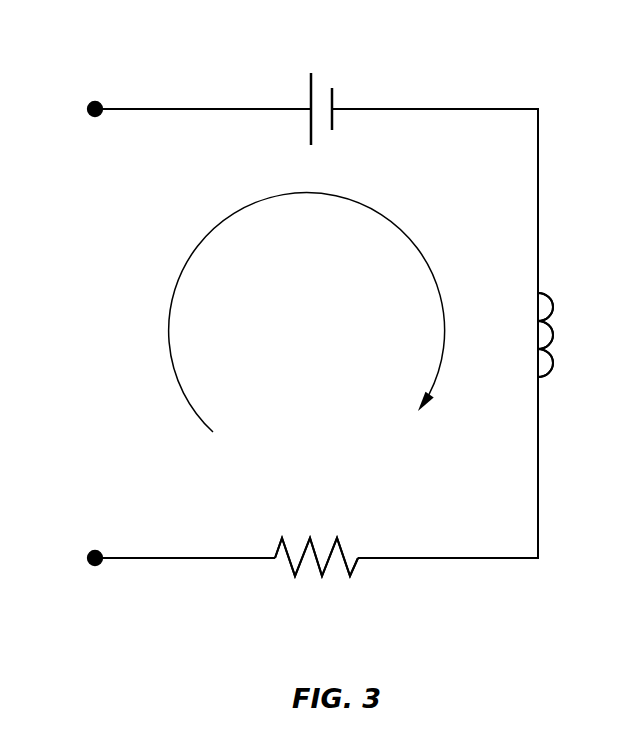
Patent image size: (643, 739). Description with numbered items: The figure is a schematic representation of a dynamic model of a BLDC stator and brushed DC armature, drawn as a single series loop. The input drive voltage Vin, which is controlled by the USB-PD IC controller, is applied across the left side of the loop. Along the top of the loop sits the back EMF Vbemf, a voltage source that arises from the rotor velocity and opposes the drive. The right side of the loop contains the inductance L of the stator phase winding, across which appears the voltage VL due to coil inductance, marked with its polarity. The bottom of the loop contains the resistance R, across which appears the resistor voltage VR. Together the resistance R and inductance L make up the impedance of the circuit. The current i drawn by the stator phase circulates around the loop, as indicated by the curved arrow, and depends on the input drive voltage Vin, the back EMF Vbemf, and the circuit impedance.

The back EMF Vbemf is at (308, 90).
The input drive voltage Vin is at (72, 142).
The current i is at (307, 312).
The inductance L is at (528, 335).
The voltage due to coil inductance VL is at (581, 336).
The resistance R is at (316, 538).
The resistor voltage VR is at (316, 580).